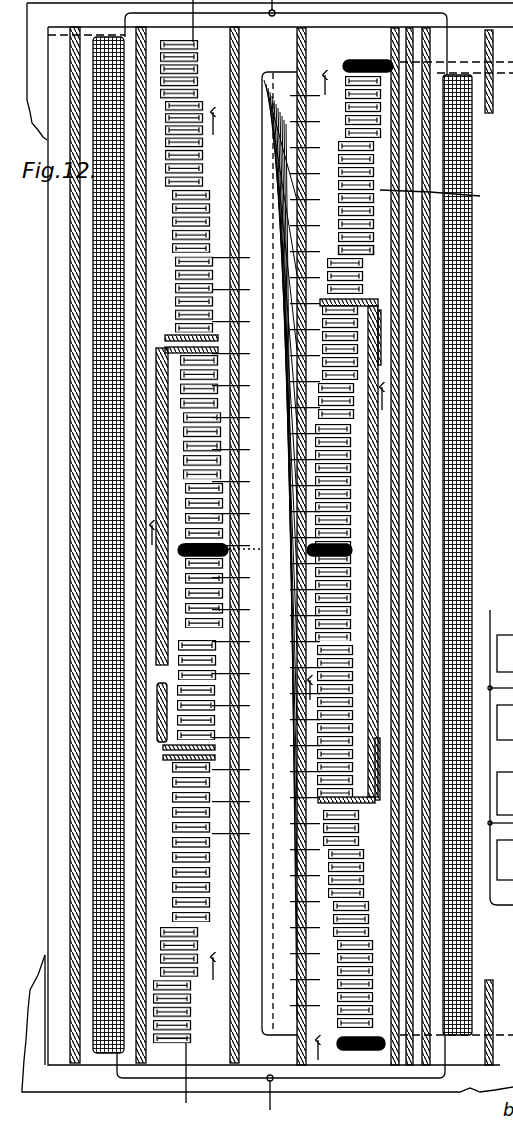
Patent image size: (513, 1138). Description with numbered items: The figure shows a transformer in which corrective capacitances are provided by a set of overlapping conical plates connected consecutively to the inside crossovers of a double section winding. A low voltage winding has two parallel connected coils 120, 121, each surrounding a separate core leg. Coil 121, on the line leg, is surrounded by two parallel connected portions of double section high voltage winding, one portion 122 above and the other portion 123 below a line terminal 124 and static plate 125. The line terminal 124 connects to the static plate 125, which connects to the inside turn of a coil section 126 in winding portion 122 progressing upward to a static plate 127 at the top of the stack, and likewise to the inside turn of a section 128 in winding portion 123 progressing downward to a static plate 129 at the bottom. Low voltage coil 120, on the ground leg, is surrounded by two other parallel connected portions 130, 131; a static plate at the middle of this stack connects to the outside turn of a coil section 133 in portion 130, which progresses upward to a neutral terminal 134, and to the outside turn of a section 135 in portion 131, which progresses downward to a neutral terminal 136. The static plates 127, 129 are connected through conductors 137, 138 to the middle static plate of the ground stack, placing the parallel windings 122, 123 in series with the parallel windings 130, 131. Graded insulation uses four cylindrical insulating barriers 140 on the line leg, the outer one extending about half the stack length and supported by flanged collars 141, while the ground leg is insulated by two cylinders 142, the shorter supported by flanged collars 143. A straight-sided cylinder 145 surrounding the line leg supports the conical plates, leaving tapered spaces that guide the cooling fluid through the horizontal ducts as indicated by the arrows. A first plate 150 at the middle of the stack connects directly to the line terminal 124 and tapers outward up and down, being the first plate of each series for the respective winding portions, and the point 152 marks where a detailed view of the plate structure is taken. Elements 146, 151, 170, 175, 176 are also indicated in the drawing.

The low voltage winding coil 120 is at (98, 686).
The low voltage winding coil 121 is at (462, 952).
The high voltage winding portion 122 is at (372, 262).
The high voltage winding portion 123 is at (384, 850).
The line terminal 124 is at (276, 556).
The static plate 125 is at (352, 550).
The coil section 126 is at (380, 540).
The static plate 127 is at (343, 64).
The coil section 128 is at (380, 566).
The static plate 129 is at (350, 1050).
The high voltage winding portion 130 is at (172, 292).
The high voltage winding portion 131 is at (185, 540).
The coil section 133 is at (228, 541).
The neutral terminal 134 is at (192, 52).
The coil section 135 is at (186, 560).
The neutral terminal 136 is at (188, 1052).
The conductor 137 is at (268, 72).
The conductor 138 is at (270, 1040).
The cylindrical insulating barriers 140 is at (413, 394).
The flanged collars 141 is at (372, 299).
The cylinders 142 is at (172, 236).
The flanged collars 143 is at (160, 345).
The cylinder 145 is at (297, 1060).
The lower connecting lead 146 is at (190, 1030).
The first plate 150 is at (290, 560).
The cross connection 151 is at (272, 548).
The section point 152 is at (340, 150).
The central partition wall 170 is at (300, 176).
The output lead 175 is at (480, 596).
The connection wire 176 is at (322, 200).